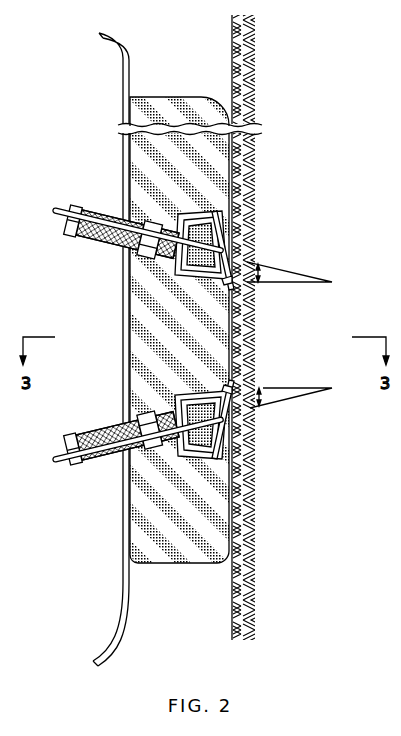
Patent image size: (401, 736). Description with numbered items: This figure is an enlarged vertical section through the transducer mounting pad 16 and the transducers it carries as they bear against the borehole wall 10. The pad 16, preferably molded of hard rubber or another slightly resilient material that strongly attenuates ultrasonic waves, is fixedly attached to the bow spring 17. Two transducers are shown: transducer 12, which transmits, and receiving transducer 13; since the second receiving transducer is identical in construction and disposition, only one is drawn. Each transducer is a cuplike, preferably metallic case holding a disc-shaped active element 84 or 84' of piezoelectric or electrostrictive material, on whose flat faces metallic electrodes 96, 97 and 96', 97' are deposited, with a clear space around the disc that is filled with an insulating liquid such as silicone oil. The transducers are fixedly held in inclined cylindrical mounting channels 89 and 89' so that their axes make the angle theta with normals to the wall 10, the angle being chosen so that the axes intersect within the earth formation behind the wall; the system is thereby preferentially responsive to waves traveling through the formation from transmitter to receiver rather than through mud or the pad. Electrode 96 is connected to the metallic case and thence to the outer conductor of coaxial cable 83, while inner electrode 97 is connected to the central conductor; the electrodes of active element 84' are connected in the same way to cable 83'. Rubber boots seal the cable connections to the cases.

The wall 10 is at (232, 34).
The transducer 12 is at (259, 413).
The receiving transducer 13 is at (256, 255).
The transducer mounting pad 16 is at (182, 135).
The bow spring 17 is at (104, 51).
The coaxial cable 83 is at (122, 458).
The coaxial cable 83' is at (123, 213).
The active element 84 is at (240, 413).
The active element 84' is at (242, 255).
The mounting channel 89 is at (258, 400).
The mounting channel 89' is at (261, 271).
The electrode 96 is at (240, 425).
The electrode 96' is at (241, 244).
The electrode 97 is at (262, 379).
The electrode 97' is at (266, 290).